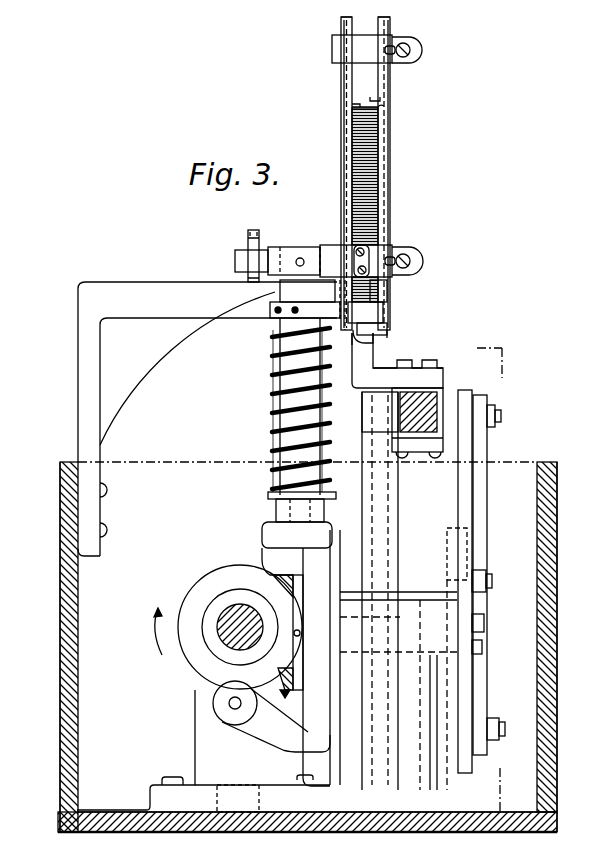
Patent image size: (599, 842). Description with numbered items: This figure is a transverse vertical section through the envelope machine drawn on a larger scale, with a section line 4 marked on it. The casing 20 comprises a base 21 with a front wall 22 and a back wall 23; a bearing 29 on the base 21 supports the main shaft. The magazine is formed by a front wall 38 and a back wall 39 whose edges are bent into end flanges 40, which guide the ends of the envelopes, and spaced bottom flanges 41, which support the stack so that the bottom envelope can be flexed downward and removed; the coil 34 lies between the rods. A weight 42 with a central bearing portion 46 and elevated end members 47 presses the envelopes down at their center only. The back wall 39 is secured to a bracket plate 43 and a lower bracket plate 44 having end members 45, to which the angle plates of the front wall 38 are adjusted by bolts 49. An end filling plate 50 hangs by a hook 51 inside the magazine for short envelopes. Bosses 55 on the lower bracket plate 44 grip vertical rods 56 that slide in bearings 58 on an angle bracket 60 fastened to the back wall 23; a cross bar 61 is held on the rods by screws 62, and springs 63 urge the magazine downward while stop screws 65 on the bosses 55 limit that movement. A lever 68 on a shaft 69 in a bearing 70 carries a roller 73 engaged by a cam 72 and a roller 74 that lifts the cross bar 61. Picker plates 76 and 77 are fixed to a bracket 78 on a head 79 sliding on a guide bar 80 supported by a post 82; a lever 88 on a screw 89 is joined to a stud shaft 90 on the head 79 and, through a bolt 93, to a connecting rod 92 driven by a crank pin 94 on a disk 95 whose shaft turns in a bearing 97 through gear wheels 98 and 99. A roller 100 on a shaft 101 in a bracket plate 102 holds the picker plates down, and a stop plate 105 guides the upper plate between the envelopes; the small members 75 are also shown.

The section line 4- 4 is at (378, 93).
The casing 20 is at (60, 471).
The base 21 is at (110, 812).
The front wall 22 is at (551, 594).
The back wall 23 is at (78, 566).
The bearing 29 is at (197, 763).
The coil spring 34 is at (368, 178).
The front wall 38 is at (390, 134).
The back wall 39 is at (341, 133).
The end flanges 40 is at (348, 200).
The bottom flanges 41 is at (376, 341).
The weight 42 is at (384, 107).
The bracket plate 43 is at (332, 53).
The lower bracket plate 44 is at (340, 251).
The end members 45 is at (419, 50).
The central bearing portion 46 is at (352, 108).
The elevated end members 47 is at (380, 98).
The bolts 49 is at (409, 56).
The end filling plate 50 is at (358, 30).
The hook 51 is at (381, 17).
The bosses 55 is at (288, 247).
The vertical rods 56 is at (275, 372).
The bearings 58 is at (187, 368).
The angle bracket 60 is at (155, 282).
The cross bar 61 is at (268, 497).
The screws 62 is at (276, 521).
The springs 63 is at (272, 411).
The stop screws 65 is at (248, 236).
The lever 68 is at (337, 546).
The shaft 69 is at (398, 599).
The bearing 70 is at (425, 762).
The cam 72 is at (178, 612).
The roller 73 is at (214, 712).
The roller 74 is at (262, 533).
The member 75 is at (344, 356).
The upper picker plate 76 is at (389, 331).
The picker plate 77 is at (388, 366).
The bearing or bracket 78 is at (441, 371).
The head 79 is at (438, 389).
The guide bar 80 is at (443, 406).
The post 82 is at (368, 443).
The lever 88 is at (474, 448).
The screw 89 is at (478, 650).
The stud shaft 90 is at (497, 417).
The connecting rod 92 is at (485, 624).
The bolt 93 is at (500, 733).
The crank pin 94 is at (492, 579).
The disk 95 is at (447, 528).
The bearing 97 is at (406, 608).
The gear wheel 98 is at (298, 643).
The gear wheel 99 is at (287, 695).
The roller 100 is at (383, 311).
The shaft 101 is at (388, 320).
The bracket plate 102 is at (273, 321).
The stop plate 105 is at (388, 290).